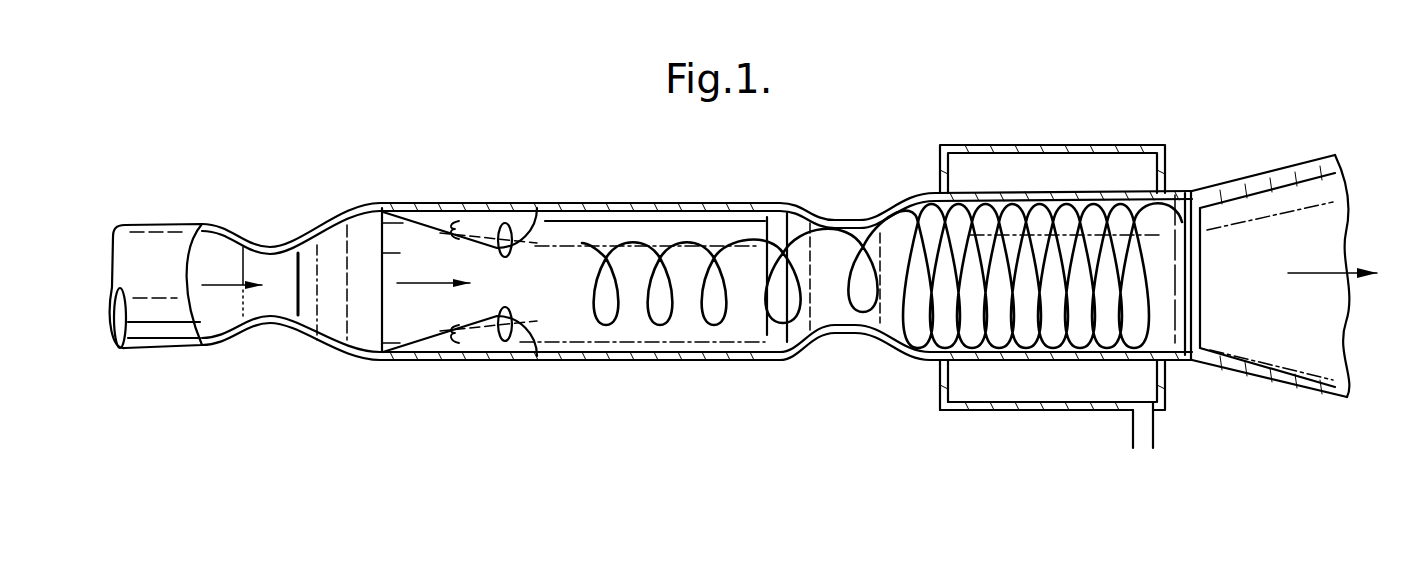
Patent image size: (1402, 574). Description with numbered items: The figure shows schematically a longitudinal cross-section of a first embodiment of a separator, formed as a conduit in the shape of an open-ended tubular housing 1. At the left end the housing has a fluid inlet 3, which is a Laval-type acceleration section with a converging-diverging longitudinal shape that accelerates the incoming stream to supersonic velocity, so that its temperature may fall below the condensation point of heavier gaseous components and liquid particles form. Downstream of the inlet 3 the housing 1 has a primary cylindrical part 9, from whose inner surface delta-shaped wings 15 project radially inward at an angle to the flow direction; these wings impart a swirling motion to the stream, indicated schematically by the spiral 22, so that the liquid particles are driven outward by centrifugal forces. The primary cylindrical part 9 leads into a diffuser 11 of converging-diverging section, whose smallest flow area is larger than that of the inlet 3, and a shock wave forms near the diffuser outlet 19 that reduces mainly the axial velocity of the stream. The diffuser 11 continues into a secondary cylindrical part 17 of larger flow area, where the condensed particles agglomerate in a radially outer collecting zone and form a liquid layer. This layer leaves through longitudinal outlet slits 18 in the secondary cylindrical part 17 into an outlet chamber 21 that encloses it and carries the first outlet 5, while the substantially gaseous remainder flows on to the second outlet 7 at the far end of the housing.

The tubular housing 1 is at (618, 198).
The fluid inlet 3 is at (160, 237).
The first outlet 5 is at (1143, 452).
The second outlet 7 is at (1338, 190).
The primary cylindrical part 9 is at (582, 362).
The diffuser 11 is at (841, 337).
The delta-shaped wings 15 is at (485, 217).
The secondary cylindrical part 17 is at (1003, 190).
The outlet slits 18 is at (1077, 195).
The diffuser outlet 19 is at (937, 364).
The outlet chamber 21 is at (962, 145).
The spiral 22 is at (748, 237).